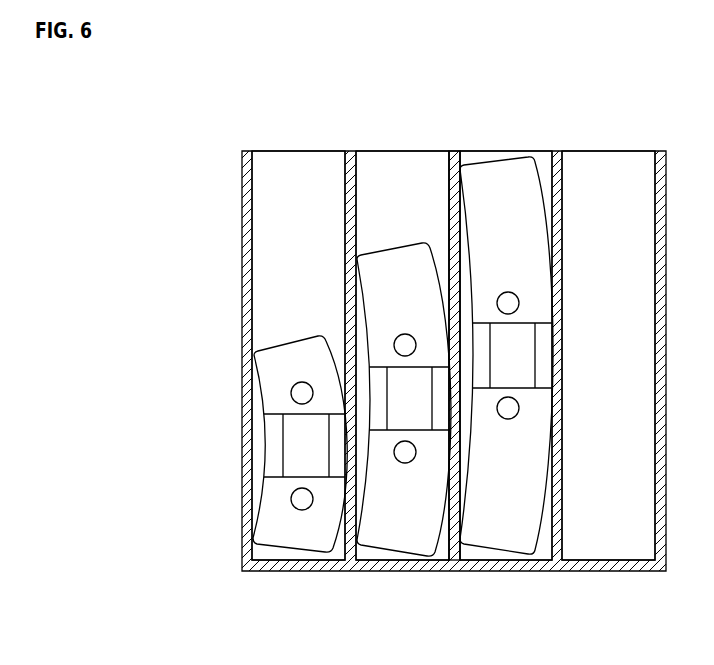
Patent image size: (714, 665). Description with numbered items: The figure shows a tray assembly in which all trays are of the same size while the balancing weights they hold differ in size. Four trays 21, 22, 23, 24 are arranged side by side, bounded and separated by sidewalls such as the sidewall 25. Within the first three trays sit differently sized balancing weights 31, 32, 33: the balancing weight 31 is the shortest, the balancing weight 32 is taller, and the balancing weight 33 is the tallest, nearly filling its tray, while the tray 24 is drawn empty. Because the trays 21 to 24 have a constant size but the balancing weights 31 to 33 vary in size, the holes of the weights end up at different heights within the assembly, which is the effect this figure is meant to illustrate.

The tray 21 is at (297, 172).
The tray 22 is at (402, 172).
The tray 23 is at (490, 158).
The tray 24 is at (610, 172).
The sidewall 25 is at (453, 155).
The balancing weight 31 is at (297, 528).
The balancing weight 32 is at (398, 528).
The balancing weight 33 is at (503, 527).